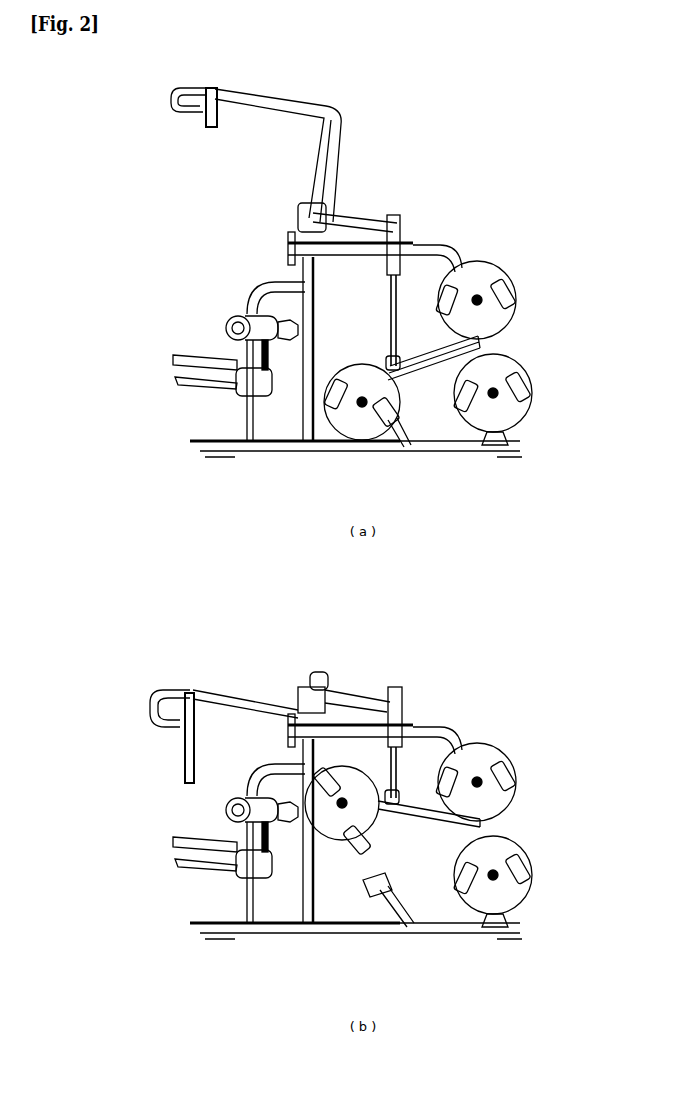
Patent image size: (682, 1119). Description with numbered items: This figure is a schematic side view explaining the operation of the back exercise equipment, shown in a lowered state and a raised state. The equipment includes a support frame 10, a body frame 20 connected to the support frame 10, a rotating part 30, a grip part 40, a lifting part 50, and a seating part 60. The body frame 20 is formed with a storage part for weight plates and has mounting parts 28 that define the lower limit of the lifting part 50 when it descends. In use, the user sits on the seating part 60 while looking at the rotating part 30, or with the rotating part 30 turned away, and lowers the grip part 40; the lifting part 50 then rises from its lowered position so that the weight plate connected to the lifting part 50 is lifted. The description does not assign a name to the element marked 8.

The wheel 8 is at (517, 313).
The support frame 10 is at (275, 455).
The body frame 20 is at (490, 345).
The mounting parts 28 is at (400, 440).
The rotating part 30 is at (363, 202).
The grip part 40 is at (250, 138).
The lifting part 50 is at (427, 383).
The seating part 60 is at (165, 345).